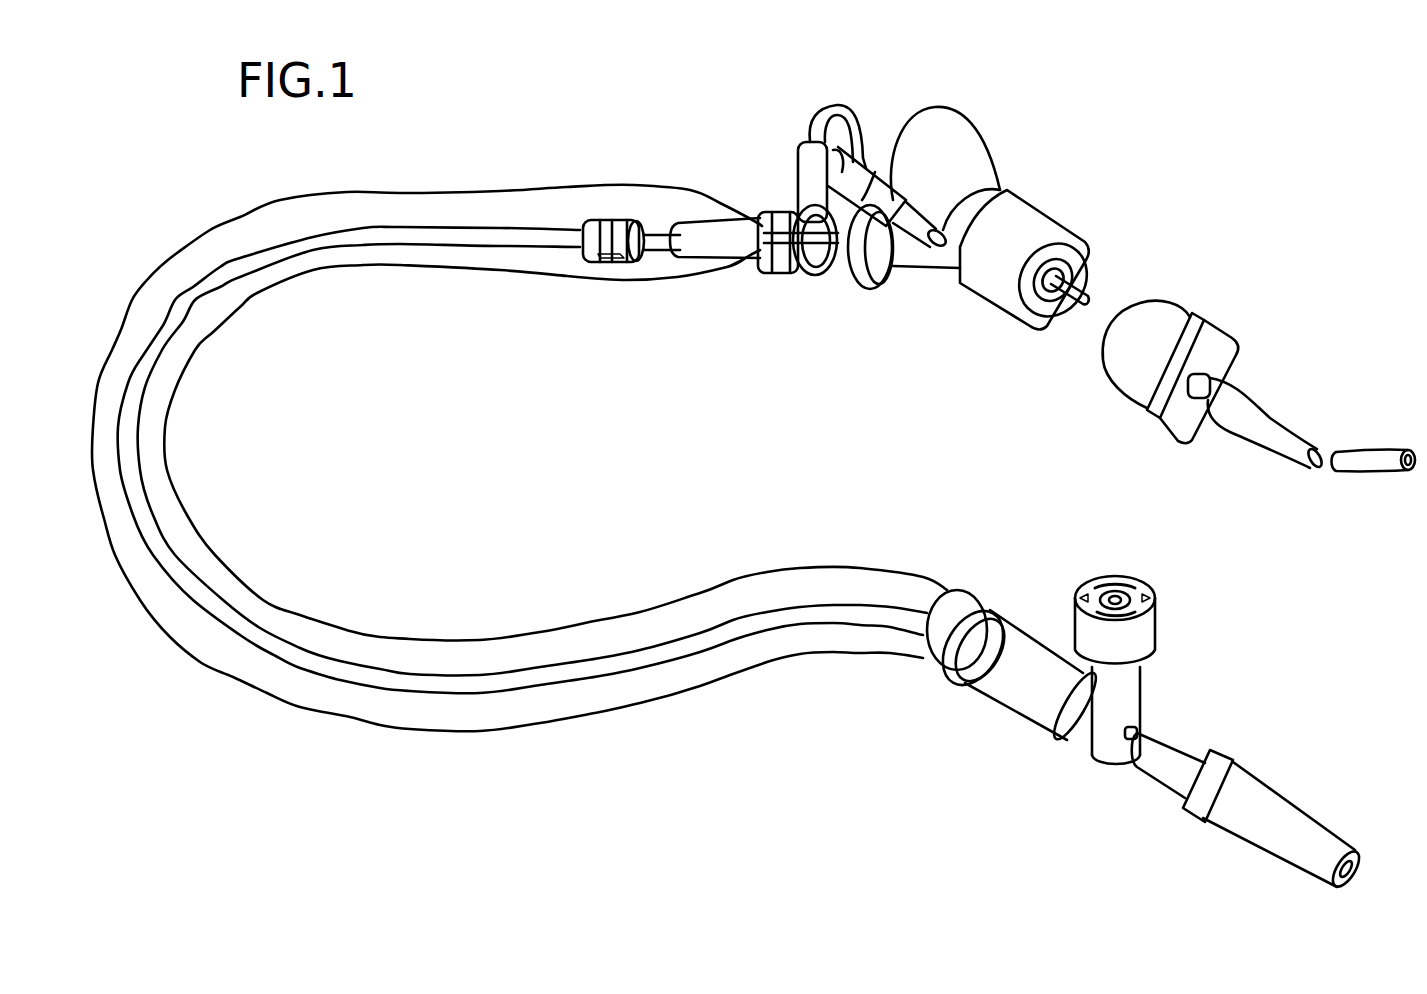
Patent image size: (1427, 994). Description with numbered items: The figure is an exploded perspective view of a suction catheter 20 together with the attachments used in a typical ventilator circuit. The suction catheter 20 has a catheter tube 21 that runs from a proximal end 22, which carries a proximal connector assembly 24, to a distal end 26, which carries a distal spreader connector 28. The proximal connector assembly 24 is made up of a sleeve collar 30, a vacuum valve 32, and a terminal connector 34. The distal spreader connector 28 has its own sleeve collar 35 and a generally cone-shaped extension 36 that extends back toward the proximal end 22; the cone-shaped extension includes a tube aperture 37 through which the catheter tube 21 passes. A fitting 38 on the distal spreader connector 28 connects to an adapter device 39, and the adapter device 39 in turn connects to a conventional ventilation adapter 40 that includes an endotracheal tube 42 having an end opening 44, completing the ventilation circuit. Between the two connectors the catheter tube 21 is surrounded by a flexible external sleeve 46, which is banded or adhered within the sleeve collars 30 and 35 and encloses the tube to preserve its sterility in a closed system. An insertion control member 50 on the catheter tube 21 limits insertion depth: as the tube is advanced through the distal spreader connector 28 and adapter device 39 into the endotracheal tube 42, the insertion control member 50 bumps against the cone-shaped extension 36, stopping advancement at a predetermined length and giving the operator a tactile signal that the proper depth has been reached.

The suction catheter 20 is at (572, 108).
The catheter tube 21 is at (163, 343).
The proximal end 22 is at (917, 722).
The proximal connector assembly 24 is at (1018, 703).
The distal end 26 is at (762, 163).
The distal spreader connector 28 is at (746, 270).
The sleeve collar 30 is at (953, 607).
The vacuum valve 32 is at (1143, 632).
The terminal connector 34 is at (1245, 793).
The sleeve collar 35 is at (793, 277).
The cone-shaped extension 36 is at (717, 237).
The tube aperture 37 is at (677, 260).
The fitting 38 is at (810, 277).
The adapter device 39 is at (965, 210).
The ventilation adapter 40 is at (1147, 323).
The endotracheal tube 42 is at (1260, 430).
The end opening 44 is at (1403, 455).
The external sleeve 46 is at (225, 650).
The insertion control member 50 is at (587, 238).